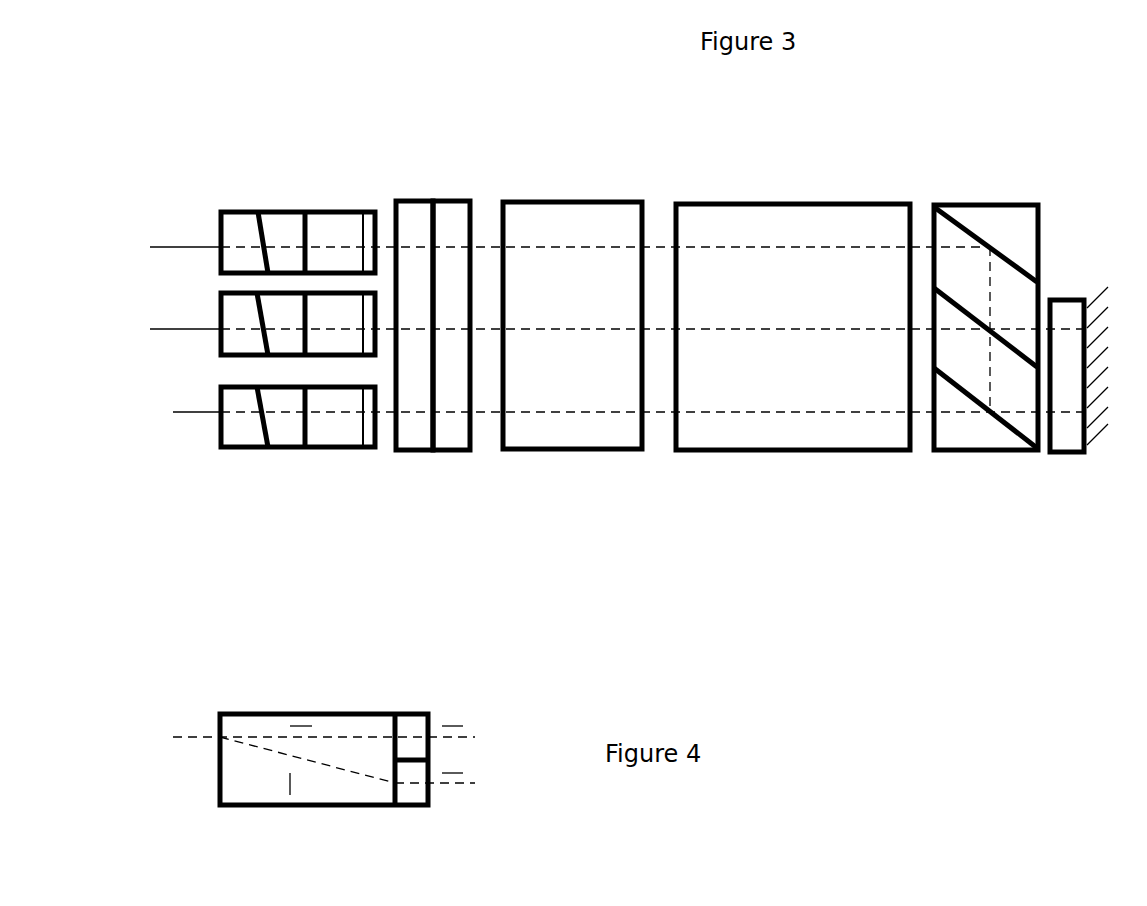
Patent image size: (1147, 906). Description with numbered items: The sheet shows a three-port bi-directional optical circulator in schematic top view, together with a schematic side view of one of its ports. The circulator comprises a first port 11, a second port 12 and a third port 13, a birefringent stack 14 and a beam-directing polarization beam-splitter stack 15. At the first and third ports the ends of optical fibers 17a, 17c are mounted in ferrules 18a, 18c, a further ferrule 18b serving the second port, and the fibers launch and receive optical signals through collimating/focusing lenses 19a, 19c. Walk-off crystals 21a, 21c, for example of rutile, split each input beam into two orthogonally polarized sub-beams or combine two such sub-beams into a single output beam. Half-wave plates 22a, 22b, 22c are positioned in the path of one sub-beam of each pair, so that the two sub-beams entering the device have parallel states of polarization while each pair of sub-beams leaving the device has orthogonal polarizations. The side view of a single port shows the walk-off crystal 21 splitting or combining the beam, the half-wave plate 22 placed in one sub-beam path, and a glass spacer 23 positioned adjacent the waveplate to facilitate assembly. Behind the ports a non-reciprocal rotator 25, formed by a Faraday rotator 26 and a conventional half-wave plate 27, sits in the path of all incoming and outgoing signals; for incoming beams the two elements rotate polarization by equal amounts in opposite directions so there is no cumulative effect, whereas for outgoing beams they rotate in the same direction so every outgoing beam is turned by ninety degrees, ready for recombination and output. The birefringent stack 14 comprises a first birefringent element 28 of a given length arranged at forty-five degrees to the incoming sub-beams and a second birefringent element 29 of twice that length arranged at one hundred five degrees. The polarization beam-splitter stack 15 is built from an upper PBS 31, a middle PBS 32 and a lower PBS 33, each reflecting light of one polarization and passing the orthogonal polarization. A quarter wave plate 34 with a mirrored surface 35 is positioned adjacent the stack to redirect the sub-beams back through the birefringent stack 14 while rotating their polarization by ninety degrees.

In FIG. 3, the first port 11 is at (186, 130).
In FIG. 3, the second port 12 is at (195, 303).
In FIG. 3, the third port 13 is at (220, 527).
In FIG. 3, the birefringent stack 14 is at (653, 157).
In FIG. 3, the beam-directing polarization beam-splitter stack 15 is at (957, 158).
In FIG. 3, the optical fiber 17a is at (212, 247).
In FIG. 3, the optical fiber 17c is at (212, 413).
In FIG. 3, the ferrule 18a is at (243, 222).
In FIG. 3, the ferrule 18b is at (245, 342).
In FIG. 3, the ferrule 18c is at (243, 435).
In FIG. 3, the collimating/focusing lens 19a is at (280, 222).
In FIG. 3, the collimating/focusing lens 19c is at (292, 437).
In FIG. 3, the walk-off crystal 21a is at (340, 222).
In FIG. 3, the walk-off crystal 21c is at (327, 438).
In FIG. 3, the half-wave plate 22a is at (363, 212).
In FIG. 3, the half-wave plate 22b is at (373, 358).
In FIG. 3, the half-wave plate 22c is at (362, 447).
In FIG. 3, the non-reciprocal rotator 25 is at (457, 157).
In FIG. 3, the Faraday rotator 26 is at (422, 200).
In FIG. 3, the half-wave plate 27 is at (443, 437).
In FIG. 3, the first birefringent element 28 is at (572, 452).
In FIG. 3, the second birefringent element 29 is at (768, 452).
In FIG. 3, the upper PBS 31 is at (1027, 202).
In FIG. 3, the middle PBS 32 is at (1013, 312).
In FIG. 3, the lower PBS 33 is at (943, 453).
In FIG. 3, the quarter wave plate 34 is at (1072, 453).
In FIG. 3, the mirrored surface 35 is at (1095, 442).
In FIG. 4, the walk-off crystal 21 is at (253, 725).
In FIG. 4, the half-wave plate 22 is at (418, 795).
In FIG. 4, the glass spacer 23 is at (417, 727).